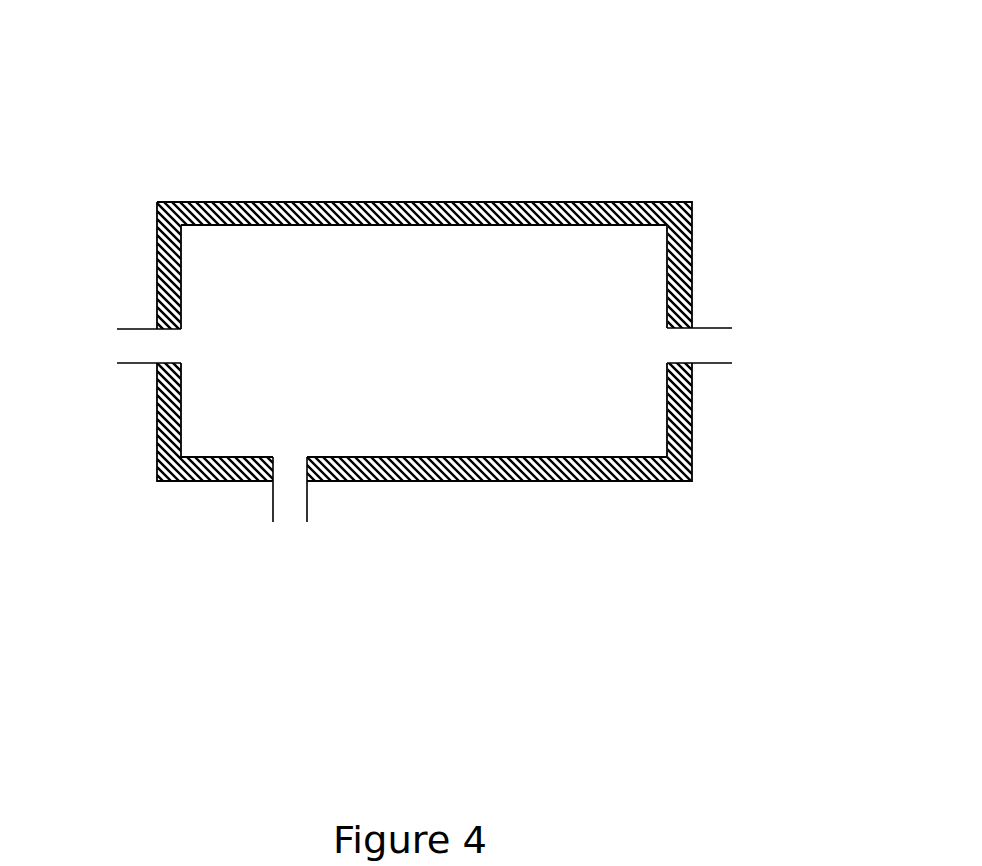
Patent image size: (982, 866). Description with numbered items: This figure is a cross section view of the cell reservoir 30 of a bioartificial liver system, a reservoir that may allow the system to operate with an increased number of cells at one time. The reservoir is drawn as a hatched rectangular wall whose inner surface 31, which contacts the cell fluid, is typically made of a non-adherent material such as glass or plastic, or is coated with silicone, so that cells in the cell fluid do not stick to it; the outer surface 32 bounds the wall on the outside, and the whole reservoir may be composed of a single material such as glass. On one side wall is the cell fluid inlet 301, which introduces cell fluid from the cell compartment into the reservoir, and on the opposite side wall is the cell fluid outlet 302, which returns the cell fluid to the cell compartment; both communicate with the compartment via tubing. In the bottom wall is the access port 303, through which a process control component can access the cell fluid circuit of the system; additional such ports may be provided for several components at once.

The cell reservoir 30 is at (491, 310).
The inner surface 31 is at (482, 225).
The outer surface 32 is at (425, 202).
The cell fluid inlet 301 is at (147, 345).
The cell fluid outlet 302 is at (702, 345).
The access port 303 is at (296, 502).